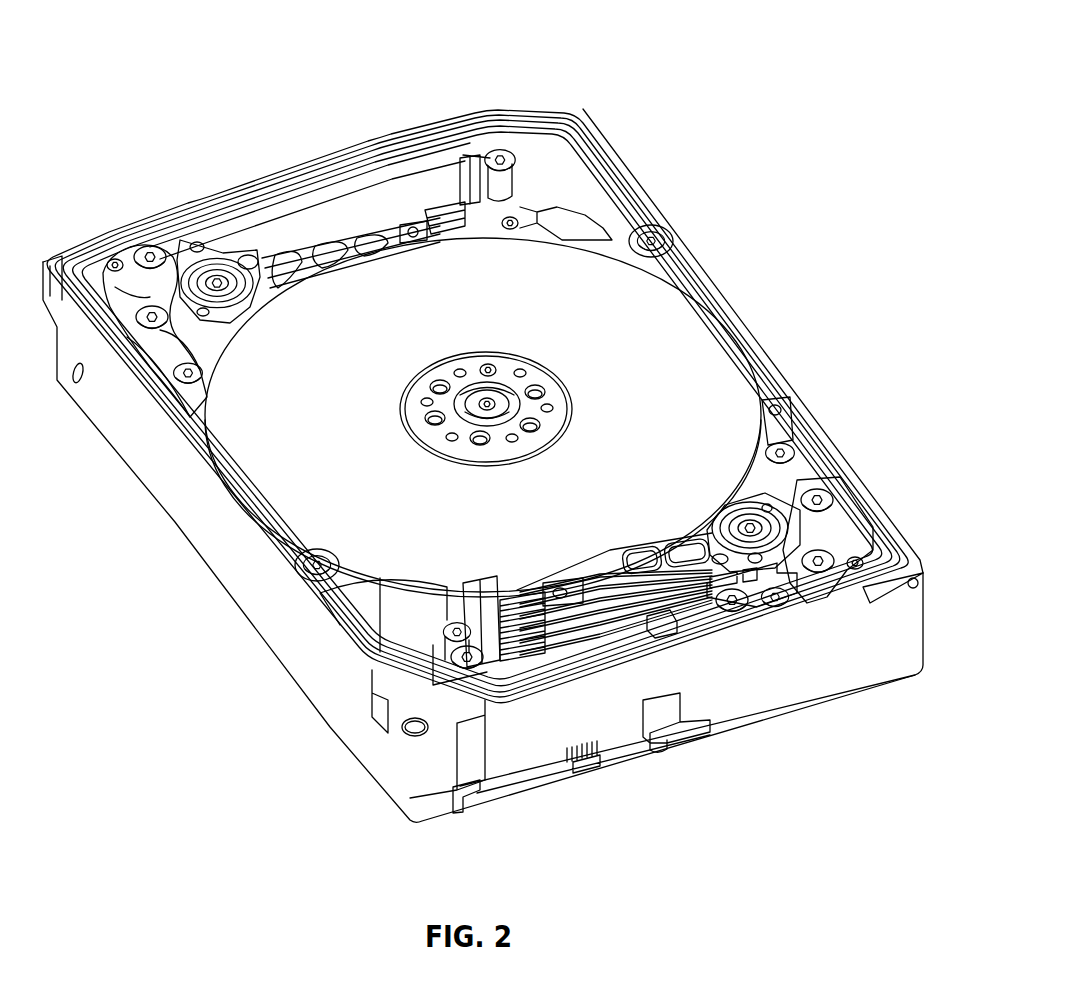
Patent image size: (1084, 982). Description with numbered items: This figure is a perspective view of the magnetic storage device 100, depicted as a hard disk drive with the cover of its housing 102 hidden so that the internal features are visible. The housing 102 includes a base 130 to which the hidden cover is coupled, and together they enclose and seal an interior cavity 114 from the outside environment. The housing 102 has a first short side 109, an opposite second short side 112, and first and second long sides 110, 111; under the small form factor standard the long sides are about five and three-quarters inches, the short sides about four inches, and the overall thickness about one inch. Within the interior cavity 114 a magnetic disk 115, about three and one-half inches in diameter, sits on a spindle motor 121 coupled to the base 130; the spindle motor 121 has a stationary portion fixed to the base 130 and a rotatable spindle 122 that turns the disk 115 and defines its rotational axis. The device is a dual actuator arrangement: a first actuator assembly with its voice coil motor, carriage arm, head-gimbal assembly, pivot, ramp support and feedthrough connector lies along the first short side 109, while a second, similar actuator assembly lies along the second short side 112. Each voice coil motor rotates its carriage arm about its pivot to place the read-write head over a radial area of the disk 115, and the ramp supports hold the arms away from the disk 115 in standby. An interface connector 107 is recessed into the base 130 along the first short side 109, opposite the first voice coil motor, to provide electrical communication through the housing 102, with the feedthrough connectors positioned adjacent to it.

The magnetic storage device 100 is at (185, 46).
The housing 102 is at (127, 467).
The interface connector 107 is at (528, 771).
The first short side 109 is at (742, 710).
The first long side 110 is at (307, 665).
The second long side 111 is at (890, 513).
The second short side 112 is at (337, 153).
The interior cavity 114 is at (365, 606).
The magnetic disk 115 is at (697, 347).
The spindle motor 121 is at (490, 403).
The spindle 122 is at (562, 436).
The base 130 is at (933, 617).